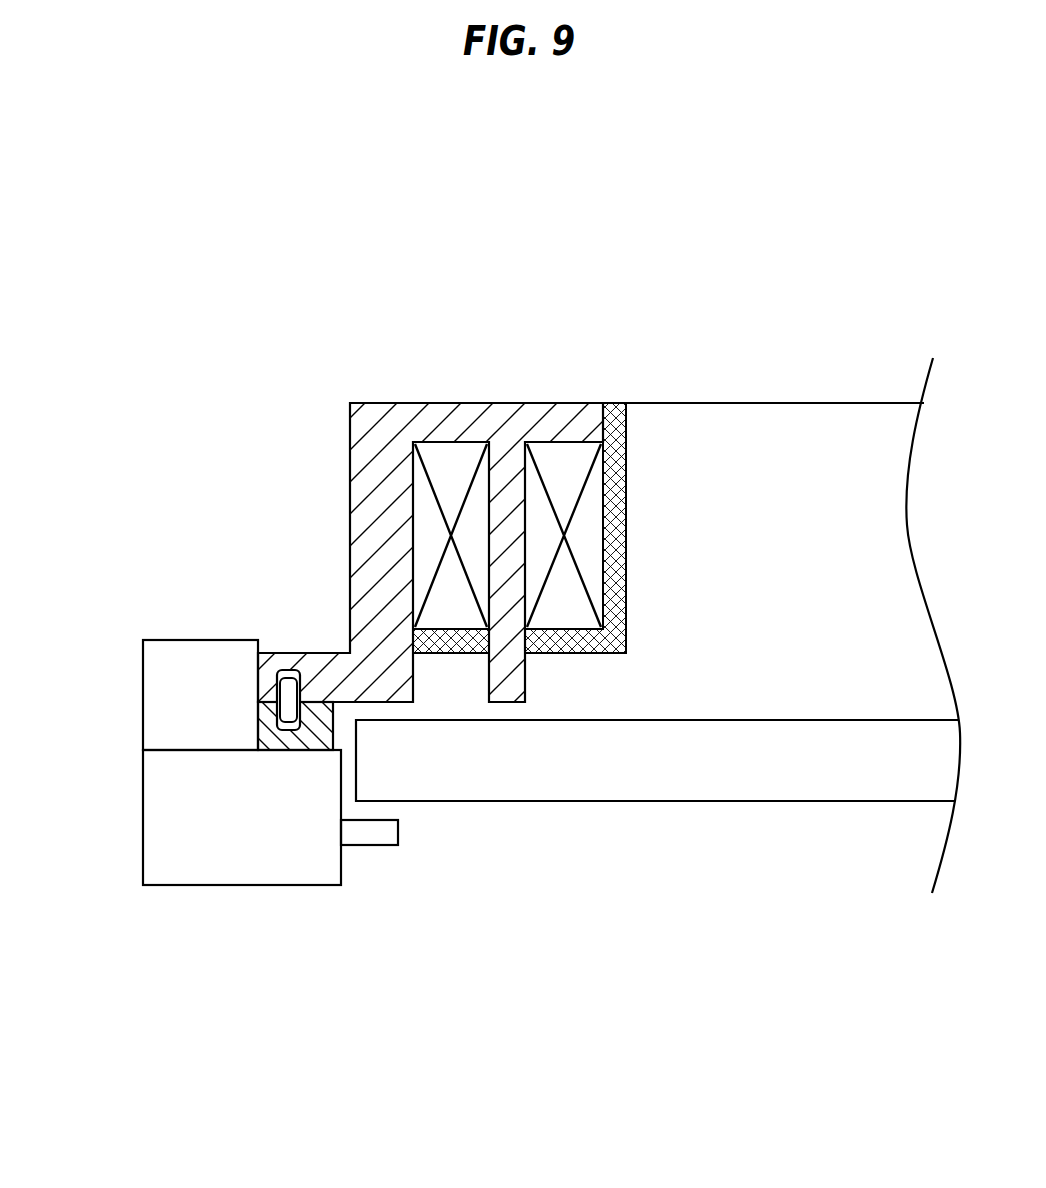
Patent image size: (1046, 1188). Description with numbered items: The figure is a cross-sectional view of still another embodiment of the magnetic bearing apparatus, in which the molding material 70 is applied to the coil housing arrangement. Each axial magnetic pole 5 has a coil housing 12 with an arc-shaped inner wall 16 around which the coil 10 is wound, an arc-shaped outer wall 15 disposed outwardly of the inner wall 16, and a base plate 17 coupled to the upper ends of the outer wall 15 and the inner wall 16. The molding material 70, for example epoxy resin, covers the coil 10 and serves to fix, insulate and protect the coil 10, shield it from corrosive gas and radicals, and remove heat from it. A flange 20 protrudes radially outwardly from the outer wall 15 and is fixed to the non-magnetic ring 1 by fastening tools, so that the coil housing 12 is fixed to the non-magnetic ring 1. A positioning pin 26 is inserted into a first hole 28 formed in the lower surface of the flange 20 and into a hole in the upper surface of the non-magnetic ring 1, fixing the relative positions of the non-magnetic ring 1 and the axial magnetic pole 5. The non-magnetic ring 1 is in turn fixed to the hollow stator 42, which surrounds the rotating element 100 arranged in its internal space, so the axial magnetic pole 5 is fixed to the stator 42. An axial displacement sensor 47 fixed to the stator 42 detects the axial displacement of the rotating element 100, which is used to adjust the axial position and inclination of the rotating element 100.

The non-magnetic ring 1 is at (258, 735).
The axial magnetic pole 5 is at (430, 308).
The coil 10 is at (590, 515).
The coil housing 12 is at (393, 402).
The outer wall 15 is at (348, 492).
The inner wall 16 is at (526, 504).
The base plate 17 is at (480, 403).
The flange 20 is at (310, 652).
The positioning pin 26 is at (287, 695).
The first hole 28 is at (283, 670).
The stator 42 is at (218, 887).
The axial displacement sensor 47 is at (367, 845).
The molding material 70 is at (627, 573).
The rotating element 100 is at (672, 803).